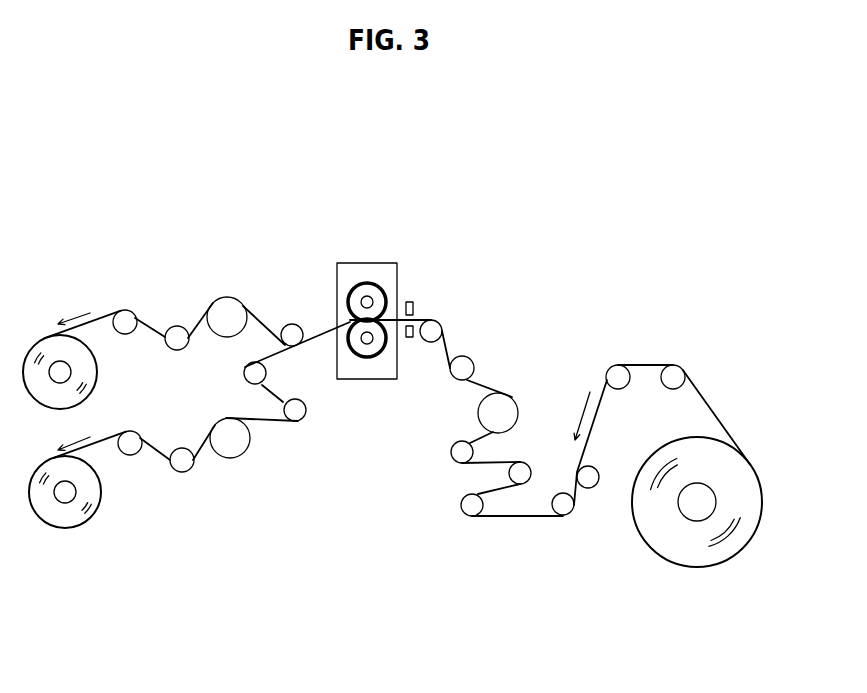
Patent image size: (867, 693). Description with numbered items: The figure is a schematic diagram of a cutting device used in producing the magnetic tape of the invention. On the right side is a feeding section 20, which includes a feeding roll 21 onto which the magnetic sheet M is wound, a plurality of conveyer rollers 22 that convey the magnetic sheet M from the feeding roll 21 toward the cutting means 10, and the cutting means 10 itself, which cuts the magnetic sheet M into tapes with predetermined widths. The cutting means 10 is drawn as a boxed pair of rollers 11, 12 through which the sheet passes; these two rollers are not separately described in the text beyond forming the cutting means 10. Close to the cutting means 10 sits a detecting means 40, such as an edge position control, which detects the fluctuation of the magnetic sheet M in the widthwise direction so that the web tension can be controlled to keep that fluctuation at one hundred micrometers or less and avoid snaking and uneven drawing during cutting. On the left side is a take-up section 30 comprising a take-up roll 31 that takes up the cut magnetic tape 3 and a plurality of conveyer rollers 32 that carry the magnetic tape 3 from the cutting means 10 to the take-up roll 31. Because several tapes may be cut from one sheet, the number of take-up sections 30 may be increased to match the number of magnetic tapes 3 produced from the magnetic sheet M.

The magnetic tape 3 is at (152, 327).
The cutting means 10 is at (378, 369).
The upper laminating roller 11 is at (373, 297).
The lower laminating roller 12 is at (363, 344).
The feeding section 20 is at (616, 466).
The feeding roll 21 is at (707, 502).
The conveyer rollers 22 is at (463, 365).
The take-up section 30 is at (170, 502).
The take-up roll 31 is at (65, 500).
The conveyer rollers 32 is at (293, 418).
The detecting means 40 is at (410, 305).
The magnetic sheet M is at (647, 367).